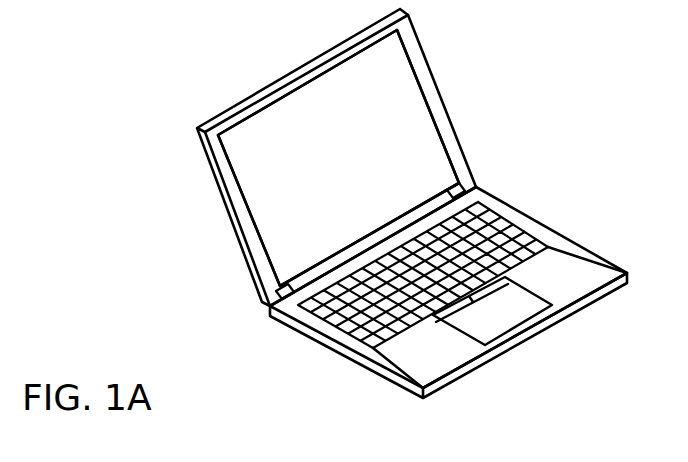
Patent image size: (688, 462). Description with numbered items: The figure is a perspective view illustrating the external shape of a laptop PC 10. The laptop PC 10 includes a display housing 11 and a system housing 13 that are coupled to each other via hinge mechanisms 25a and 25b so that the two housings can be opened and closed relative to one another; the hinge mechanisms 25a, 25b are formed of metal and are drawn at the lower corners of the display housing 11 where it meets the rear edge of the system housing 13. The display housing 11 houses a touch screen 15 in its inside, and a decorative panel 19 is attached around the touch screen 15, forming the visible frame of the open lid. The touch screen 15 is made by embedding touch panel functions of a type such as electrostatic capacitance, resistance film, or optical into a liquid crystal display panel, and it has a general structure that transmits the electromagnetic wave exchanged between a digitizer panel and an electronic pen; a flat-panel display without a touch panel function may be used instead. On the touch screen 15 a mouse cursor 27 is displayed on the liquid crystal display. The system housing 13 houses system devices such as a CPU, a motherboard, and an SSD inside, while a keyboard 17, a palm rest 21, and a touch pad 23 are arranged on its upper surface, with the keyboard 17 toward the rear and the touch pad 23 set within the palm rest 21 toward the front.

The laptop PC 10 is at (525, 100).
The display housing 11 is at (435, 80).
The system housing 13 is at (510, 205).
The touch screen 15 is at (308, 100).
The keyboard 17 is at (480, 202).
The decorative panel 19 is at (419, 43).
The palm rest 21 is at (579, 270).
The touch pad 23 is at (528, 303).
The hinge mechanism 25a is at (285, 282).
The hinge mechanism 25b is at (450, 186).
The mouse cursor 27 is at (310, 198).